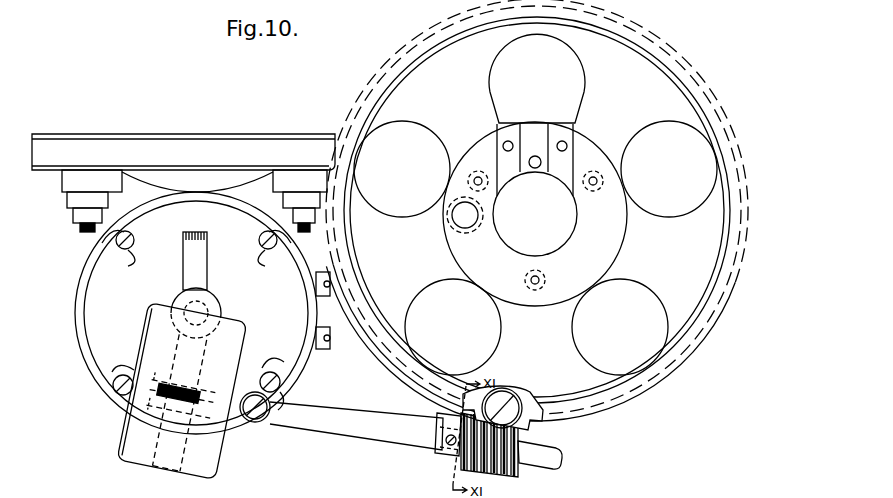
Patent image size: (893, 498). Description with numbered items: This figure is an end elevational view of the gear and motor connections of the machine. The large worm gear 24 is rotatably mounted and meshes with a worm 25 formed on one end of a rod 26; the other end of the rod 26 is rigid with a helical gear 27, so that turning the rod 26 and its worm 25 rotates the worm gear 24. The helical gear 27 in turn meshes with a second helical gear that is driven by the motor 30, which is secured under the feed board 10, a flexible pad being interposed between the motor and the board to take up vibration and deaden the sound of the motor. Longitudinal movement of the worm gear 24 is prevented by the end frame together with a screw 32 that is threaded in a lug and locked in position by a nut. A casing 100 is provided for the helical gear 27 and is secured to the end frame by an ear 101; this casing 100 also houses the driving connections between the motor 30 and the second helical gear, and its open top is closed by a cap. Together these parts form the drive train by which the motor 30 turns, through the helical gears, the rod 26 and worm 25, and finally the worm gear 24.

The feed board 10 is at (266, 150).
The worm gear 24 is at (641, 58).
The worm 25 is at (496, 476).
The rod 26 is at (361, 434).
The helical gear 27 is at (171, 460).
The motor 30 is at (93, 342).
The screw 32 is at (516, 407).
The casing 100 is at (131, 468).
The ear 101 is at (243, 424).